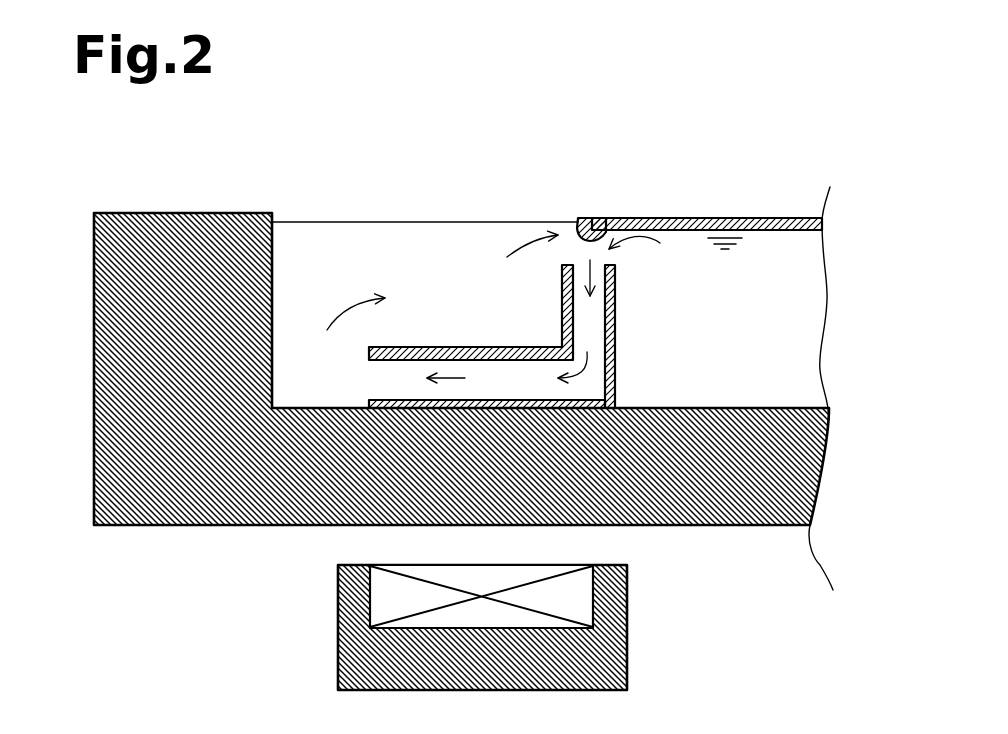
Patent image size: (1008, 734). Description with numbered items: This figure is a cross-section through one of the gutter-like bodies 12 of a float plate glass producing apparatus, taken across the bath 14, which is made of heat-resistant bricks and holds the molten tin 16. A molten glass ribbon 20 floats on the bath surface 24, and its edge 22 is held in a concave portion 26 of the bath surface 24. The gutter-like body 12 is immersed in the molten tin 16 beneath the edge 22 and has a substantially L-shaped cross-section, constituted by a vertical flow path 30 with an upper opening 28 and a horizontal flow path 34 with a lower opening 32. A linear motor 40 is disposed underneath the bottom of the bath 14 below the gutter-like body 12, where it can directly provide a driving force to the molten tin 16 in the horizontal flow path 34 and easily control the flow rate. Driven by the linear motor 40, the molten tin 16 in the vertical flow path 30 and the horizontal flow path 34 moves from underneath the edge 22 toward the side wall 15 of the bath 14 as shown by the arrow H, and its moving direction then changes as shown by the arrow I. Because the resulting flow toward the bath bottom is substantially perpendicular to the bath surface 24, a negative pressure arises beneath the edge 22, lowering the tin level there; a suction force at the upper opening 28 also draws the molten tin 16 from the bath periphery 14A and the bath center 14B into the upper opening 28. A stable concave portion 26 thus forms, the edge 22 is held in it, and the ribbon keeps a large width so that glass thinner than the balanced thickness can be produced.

The gutter-like body 12 is at (462, 345).
The bath 14 is at (181, 222).
The bath periphery 14A is at (297, 274).
The bath center 14B is at (797, 245).
The side wall 15 is at (274, 236).
The molten tin 16 is at (439, 232).
The molten glass ribbon 20 is at (742, 206).
The edge 22 is at (579, 218).
The bath surface 24 is at (365, 222).
The concave portion 26 is at (607, 218).
The upper opening 28 is at (603, 258).
The vertical flow path 30 is at (593, 322).
The lower opening 32 is at (378, 383).
The horizontal flow path 34 is at (438, 403).
The linear motor 40 is at (585, 595).
The arrow H is at (592, 370).
The arrow I is at (357, 378).